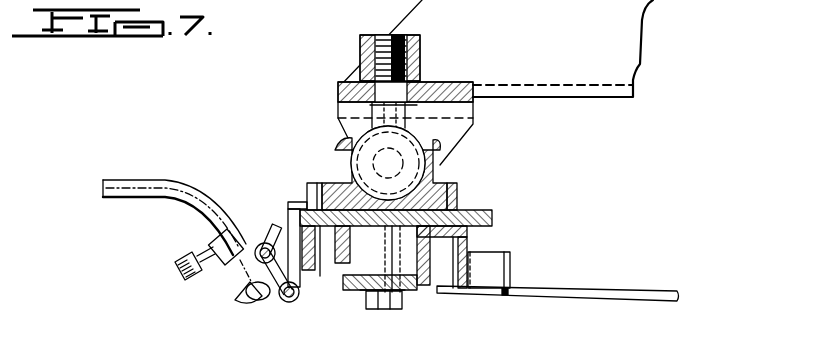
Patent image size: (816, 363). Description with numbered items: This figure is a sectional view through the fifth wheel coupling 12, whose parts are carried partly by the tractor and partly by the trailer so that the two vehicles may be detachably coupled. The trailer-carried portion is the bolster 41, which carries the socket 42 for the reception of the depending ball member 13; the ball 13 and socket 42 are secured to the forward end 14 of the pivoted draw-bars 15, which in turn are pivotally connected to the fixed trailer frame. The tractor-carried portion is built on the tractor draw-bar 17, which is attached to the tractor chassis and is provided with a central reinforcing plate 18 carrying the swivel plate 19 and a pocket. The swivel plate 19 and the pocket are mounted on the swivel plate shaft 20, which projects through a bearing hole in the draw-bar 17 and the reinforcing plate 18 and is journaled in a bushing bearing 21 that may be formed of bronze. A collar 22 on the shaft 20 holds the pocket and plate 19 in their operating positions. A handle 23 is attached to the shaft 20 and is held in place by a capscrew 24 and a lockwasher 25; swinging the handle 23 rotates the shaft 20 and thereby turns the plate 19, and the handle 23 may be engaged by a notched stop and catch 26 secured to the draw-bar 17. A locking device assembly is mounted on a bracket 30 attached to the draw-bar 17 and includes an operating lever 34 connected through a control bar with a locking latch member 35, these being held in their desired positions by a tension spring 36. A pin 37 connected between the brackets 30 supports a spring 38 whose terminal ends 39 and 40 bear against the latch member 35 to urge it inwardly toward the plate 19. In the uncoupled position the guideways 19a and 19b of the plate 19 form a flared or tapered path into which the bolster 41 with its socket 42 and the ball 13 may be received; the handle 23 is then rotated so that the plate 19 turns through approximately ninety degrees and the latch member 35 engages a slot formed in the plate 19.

The fifth wheel coupling 12 is at (284, 156).
The ball member 13 is at (446, 172).
The forward end 14 is at (476, 101).
The pivoted draw-bars 15 is at (554, 97).
The tractor draw-bar 17 is at (470, 238).
The central reinforcing plate 18 is at (460, 290).
The swivel plate 19 is at (493, 216).
The guideway 19a is at (456, 192).
The guideway 19b is at (315, 183).
The swivel plate shaft 20 is at (422, 291).
The bushing bearing 21 is at (412, 236).
The collar 22 is at (340, 291).
The handle 23 is at (550, 294).
The capscrew 24 is at (386, 310).
The lockwasher 25 is at (366, 300).
The notched stop and catch 26 is at (510, 268).
The bracket 30 is at (243, 304).
The operating lever 34 is at (150, 181).
The locking latch member 35 is at (310, 270).
The tension spring 36 is at (192, 282).
The pin 37 is at (267, 243).
The spring 38 is at (256, 300).
The terminal end 39 is at (294, 303).
The terminal end 40 is at (291, 208).
The bolster 41 is at (440, 160).
The socket 42 is at (338, 158).